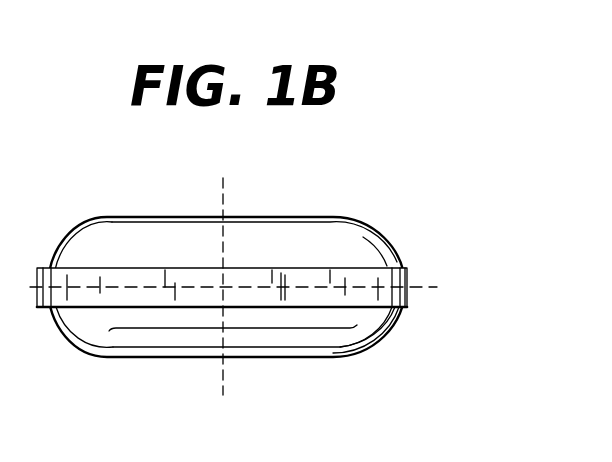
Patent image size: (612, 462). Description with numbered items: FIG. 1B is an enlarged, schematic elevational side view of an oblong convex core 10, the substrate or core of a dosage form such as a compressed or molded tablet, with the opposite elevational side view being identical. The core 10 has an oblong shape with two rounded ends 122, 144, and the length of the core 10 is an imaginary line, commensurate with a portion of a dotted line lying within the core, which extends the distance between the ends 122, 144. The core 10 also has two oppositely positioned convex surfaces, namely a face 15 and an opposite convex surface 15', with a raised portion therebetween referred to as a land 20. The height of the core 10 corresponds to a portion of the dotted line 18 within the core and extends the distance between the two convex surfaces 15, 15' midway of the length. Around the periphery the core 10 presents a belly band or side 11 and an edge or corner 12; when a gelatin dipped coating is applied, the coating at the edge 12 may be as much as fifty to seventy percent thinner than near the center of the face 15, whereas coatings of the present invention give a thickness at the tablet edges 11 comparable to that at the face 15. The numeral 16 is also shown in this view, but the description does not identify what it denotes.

The oblong convex core 10 is at (267, 282).
The belly band or side 11 is at (414, 280).
The edge or corner 12 is at (412, 265).
The face 15 is at (226, 208).
The convex surface 15' is at (227, 370).
The inner shell wall 16 is at (335, 263).
The dotted line 18 is at (234, 228).
The land 20 is at (412, 300).
The rounded end 122 is at (128, 340).
The rounded end 144 is at (350, 332).